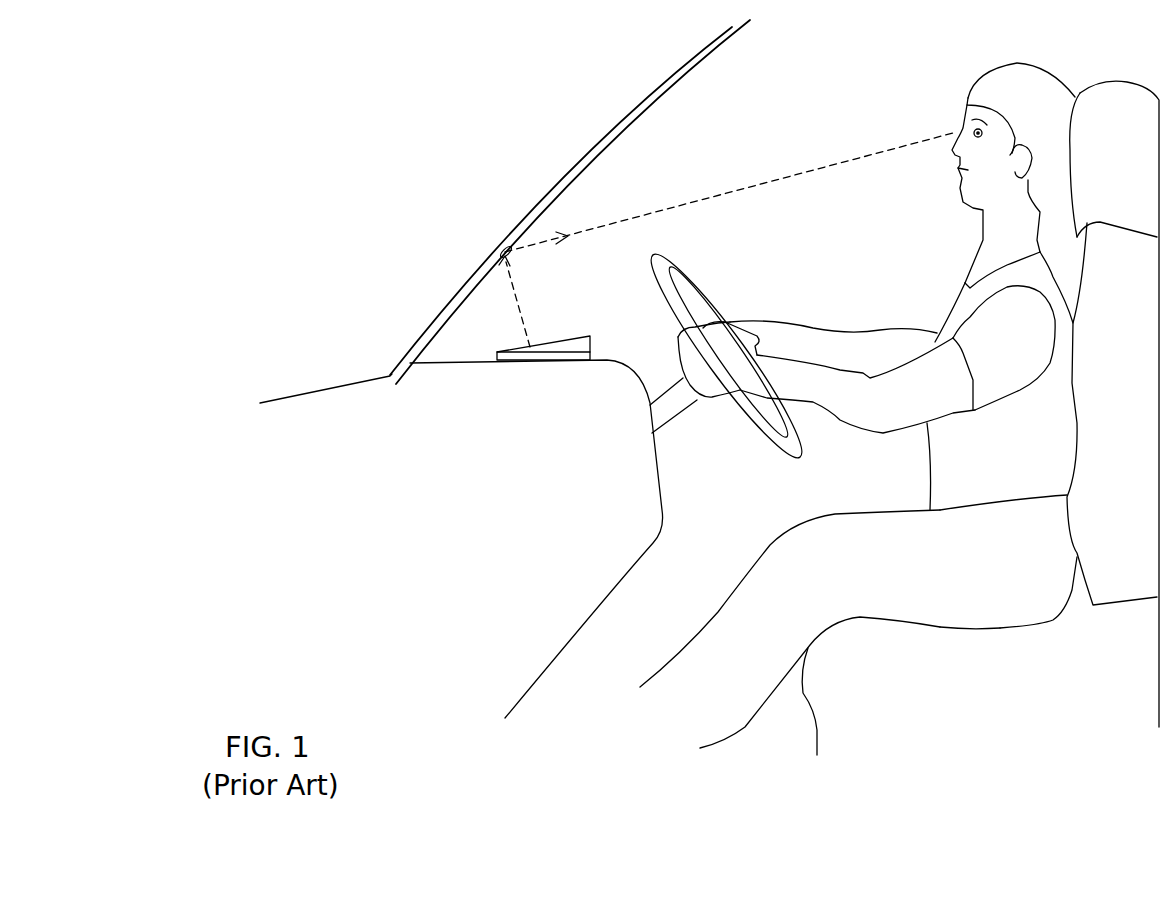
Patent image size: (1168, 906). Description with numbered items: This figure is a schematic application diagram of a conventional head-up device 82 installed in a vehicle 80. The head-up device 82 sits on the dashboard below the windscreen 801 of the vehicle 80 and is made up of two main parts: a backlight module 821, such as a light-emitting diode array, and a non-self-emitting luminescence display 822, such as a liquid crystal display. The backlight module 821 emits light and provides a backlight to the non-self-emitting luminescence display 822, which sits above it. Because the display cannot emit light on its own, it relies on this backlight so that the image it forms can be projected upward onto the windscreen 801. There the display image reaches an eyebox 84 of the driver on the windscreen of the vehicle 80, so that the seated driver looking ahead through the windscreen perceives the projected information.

The vehicle 80 is at (325, 389).
The windshield 801 is at (615, 127).
The head-up device 82 is at (569, 340).
The backlight module 821 is at (558, 360).
The non-self-emitting luminescence display 822 is at (560, 350).
The eyebox 84 is at (512, 247).